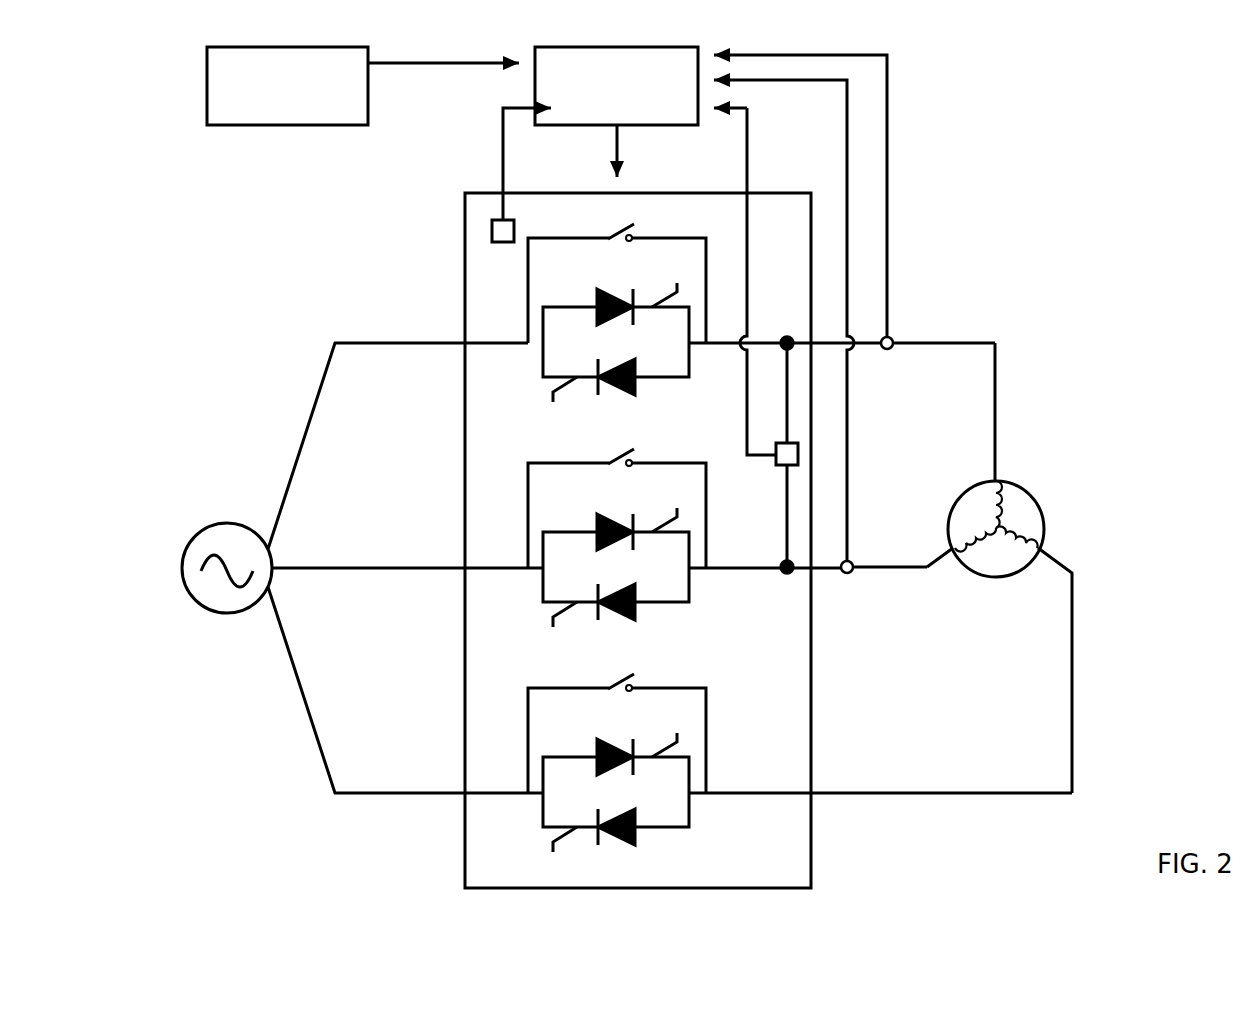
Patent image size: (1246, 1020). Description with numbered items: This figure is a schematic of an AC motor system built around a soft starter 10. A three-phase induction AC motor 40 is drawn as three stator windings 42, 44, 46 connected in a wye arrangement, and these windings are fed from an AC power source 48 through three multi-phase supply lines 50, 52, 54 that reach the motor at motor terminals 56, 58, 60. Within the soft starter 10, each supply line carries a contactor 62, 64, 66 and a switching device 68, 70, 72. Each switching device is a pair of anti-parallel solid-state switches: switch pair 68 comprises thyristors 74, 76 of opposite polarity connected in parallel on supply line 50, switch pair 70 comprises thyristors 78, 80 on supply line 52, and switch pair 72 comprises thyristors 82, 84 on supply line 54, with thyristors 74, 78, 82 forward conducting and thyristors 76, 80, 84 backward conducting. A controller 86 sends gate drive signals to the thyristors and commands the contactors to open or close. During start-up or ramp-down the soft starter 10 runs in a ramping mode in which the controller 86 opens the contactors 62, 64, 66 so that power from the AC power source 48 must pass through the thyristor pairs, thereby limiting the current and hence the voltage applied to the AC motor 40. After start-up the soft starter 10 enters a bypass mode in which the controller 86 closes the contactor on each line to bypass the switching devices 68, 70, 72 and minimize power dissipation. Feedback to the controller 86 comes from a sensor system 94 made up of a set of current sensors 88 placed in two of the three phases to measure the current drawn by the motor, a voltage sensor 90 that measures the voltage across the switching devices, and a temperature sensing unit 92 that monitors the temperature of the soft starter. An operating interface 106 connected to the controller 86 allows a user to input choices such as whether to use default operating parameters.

The soft starter 10 is at (464, 206).
The AC motor 40 is at (1013, 529).
The stator winding 42 is at (1002, 516).
The stator winding 44 is at (1019, 550).
The stator winding 46 is at (984, 536).
The AC power source 48 is at (209, 530).
The supply line 50 is at (963, 342).
The supply line 52 is at (872, 580).
The supply line 54 is at (926, 792).
The motor terminal 56 is at (993, 460).
The motor terminal 58 is at (931, 563).
The motor terminal 60 is at (1056, 565).
The contactor 62 is at (623, 233).
The contactor 64 is at (623, 458).
The contactor 66 is at (623, 683).
The switching device 68 is at (666, 396).
The switching device 70 is at (666, 621).
The switching device 72 is at (666, 846).
The thyristor 74 is at (598, 298).
The thyristor 76 is at (634, 370).
The thyristor 78 is at (598, 523).
The thyristor 80 is at (634, 595).
The thyristor 82 is at (598, 748).
The thyristor 84 is at (634, 820).
The controller 86 is at (568, 126).
The current sensor 88 is at (893, 339).
The voltage sensor 90 is at (776, 469).
The temperature sensing unit 92 is at (508, 242).
The sensor system 94 is at (920, 197).
The operating interface 106 is at (232, 127).